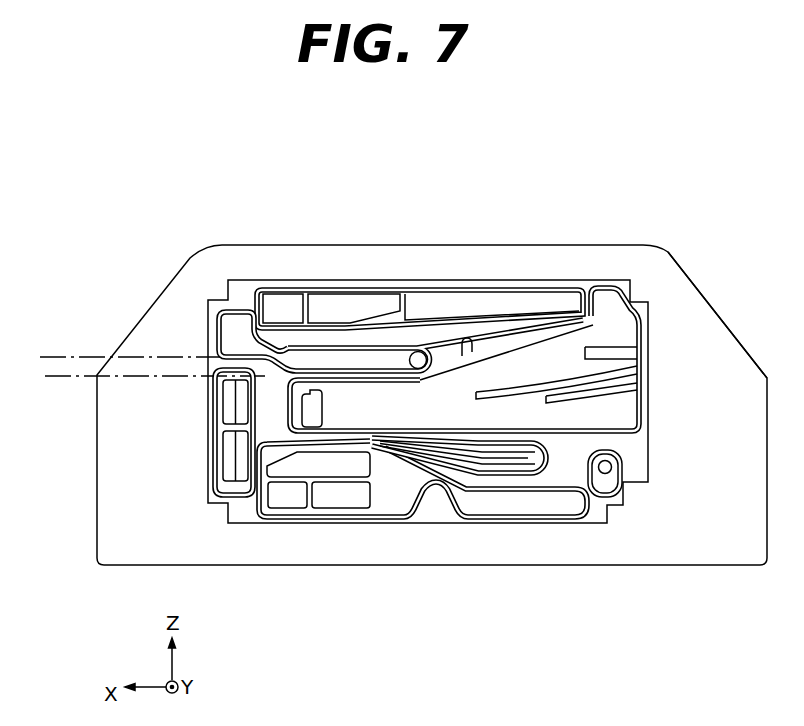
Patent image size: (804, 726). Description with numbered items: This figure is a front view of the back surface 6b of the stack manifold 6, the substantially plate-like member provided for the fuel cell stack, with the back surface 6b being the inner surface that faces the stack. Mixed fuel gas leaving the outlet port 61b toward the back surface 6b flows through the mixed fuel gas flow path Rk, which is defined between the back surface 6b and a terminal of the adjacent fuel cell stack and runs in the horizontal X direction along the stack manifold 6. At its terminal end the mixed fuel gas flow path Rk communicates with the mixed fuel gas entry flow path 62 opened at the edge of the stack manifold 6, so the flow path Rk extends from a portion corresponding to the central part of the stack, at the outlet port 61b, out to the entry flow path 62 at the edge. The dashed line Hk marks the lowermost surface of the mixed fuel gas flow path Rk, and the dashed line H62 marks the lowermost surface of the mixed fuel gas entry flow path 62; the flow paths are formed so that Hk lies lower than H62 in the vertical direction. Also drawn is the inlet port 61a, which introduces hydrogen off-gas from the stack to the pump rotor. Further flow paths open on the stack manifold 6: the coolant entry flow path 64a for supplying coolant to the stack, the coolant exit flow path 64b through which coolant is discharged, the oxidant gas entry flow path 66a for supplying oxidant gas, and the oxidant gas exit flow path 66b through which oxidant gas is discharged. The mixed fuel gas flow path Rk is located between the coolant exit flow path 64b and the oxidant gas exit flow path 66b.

The stack manifold 6 is at (668, 250).
The back surface 6b is at (698, 313).
The mixed fuel gas entry flow path 62 is at (238, 326).
The dashed line indicating lowermost surface of mixed fuel gas entry flow path H62 is at (72, 356).
The dashed line indicating lowermost surface of mixed fuel gas flow path Hk is at (55, 378).
The mixed fuel gas flow path Rk is at (322, 356).
The inlet port 61a is at (398, 456).
The outlet port 61b is at (424, 347).
The coolant entry flow path 64a is at (230, 403).
The coolant exit flow path 64b is at (352, 412).
The oxidant gas entry flow path 66a is at (288, 500).
The oxidant gas exit flow path 66b is at (465, 310).